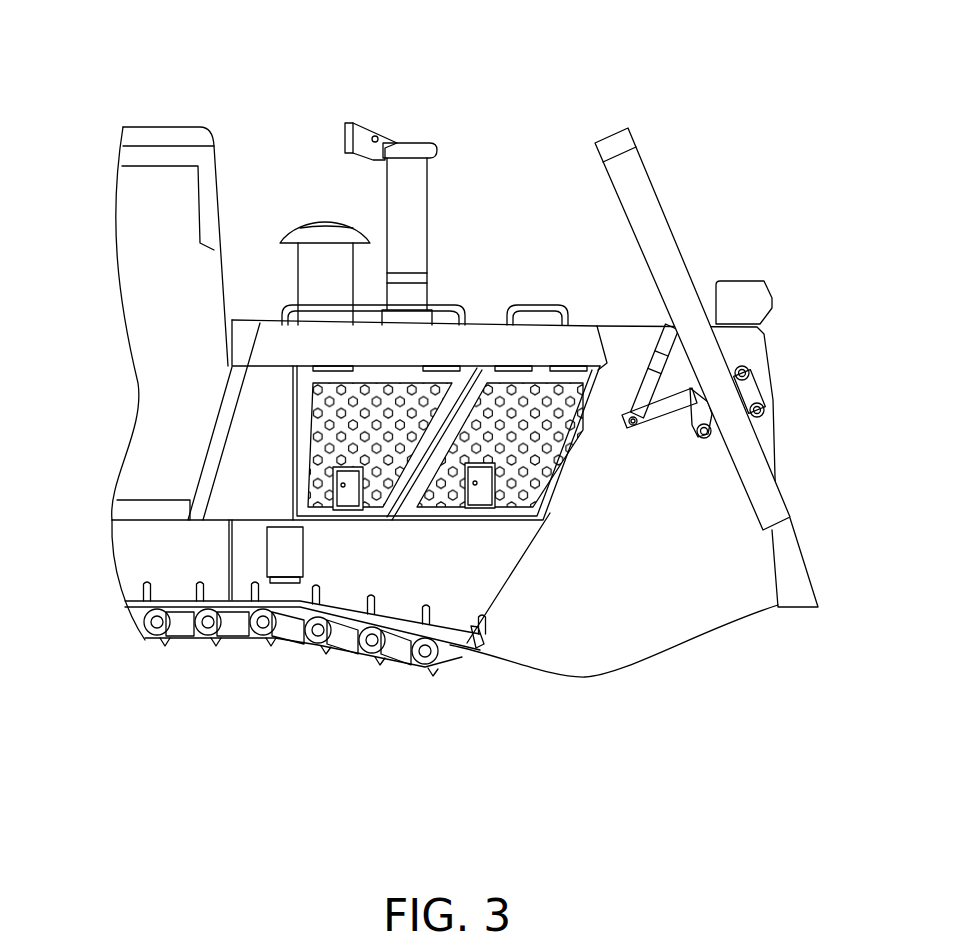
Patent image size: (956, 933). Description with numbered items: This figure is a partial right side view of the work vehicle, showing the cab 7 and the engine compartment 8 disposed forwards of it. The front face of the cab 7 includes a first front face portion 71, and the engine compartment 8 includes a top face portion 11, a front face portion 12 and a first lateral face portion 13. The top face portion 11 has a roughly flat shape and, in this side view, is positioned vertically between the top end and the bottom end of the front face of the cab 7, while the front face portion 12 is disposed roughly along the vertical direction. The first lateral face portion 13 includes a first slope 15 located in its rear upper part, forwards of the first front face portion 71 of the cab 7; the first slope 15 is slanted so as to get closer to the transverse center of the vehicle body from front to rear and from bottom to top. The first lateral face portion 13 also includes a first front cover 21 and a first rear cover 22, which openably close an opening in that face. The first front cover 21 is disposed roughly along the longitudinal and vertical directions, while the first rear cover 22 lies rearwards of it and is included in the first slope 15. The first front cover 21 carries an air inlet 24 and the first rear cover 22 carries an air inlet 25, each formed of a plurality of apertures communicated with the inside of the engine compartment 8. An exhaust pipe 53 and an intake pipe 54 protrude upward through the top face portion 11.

The cab 7 is at (160, 135).
The first front face portion 71 is at (155, 345).
The exhaust pipe 53 is at (413, 150).
The intake pipe 54 is at (320, 222).
The top face portion 11 is at (487, 325).
The engine compartment 8 is at (562, 292).
The first slope 15 is at (288, 455).
The first lateral face portion 13 is at (490, 554).
The first front cover 21 is at (552, 513).
The air inlet 24 is at (552, 452).
The first rear cover 22 is at (385, 527).
The air inlet 25 is at (317, 647).
The front face portion 12 is at (780, 420).